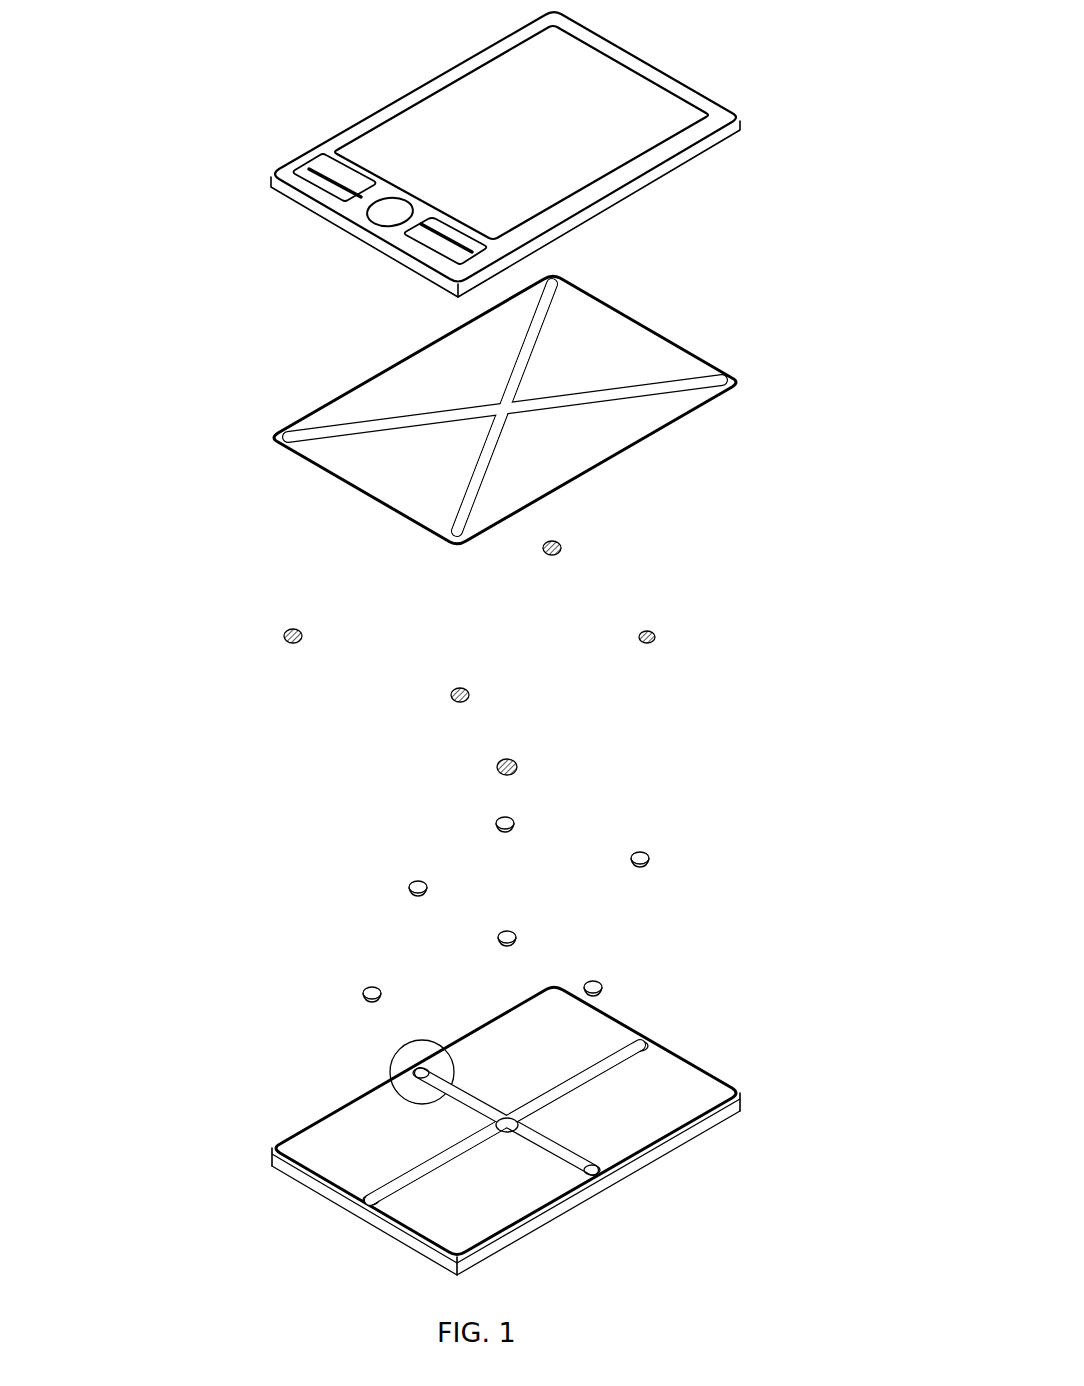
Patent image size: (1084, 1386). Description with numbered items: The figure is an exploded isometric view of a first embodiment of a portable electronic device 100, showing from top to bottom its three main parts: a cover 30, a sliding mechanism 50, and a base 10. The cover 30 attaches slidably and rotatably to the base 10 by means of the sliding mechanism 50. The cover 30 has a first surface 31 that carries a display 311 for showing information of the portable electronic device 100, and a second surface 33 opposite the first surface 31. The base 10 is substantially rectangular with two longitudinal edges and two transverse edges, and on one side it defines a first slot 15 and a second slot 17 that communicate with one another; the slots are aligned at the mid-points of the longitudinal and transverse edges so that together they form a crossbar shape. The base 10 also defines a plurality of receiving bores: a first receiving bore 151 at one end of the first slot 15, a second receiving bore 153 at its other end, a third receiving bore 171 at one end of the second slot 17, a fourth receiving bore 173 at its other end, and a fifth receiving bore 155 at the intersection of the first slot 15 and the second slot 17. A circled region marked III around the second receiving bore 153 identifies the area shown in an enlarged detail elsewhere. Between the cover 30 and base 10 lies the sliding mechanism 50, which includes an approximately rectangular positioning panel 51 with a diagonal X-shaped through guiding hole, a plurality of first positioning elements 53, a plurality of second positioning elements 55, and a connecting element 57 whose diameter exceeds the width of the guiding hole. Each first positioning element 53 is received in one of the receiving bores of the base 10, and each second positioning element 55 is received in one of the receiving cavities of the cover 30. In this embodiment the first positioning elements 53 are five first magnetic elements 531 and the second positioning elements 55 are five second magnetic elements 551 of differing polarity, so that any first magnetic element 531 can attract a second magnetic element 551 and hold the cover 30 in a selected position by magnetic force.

The portable electronic device 100 is at (198, 45).
The cover 30 is at (398, 72).
The first surface 31 is at (705, 95).
The display 311 is at (618, 98).
The second surface 33 is at (310, 214).
The sliding mechanism 50 is at (830, 485).
The positioning panel 51 is at (603, 437).
The first positioning elements 53 is at (765, 542).
The first magnetic elements 531 is at (562, 548).
The connecting element 57 is at (513, 820).
The second positioning elements 55 is at (765, 777).
The second magnetic elements 551 is at (427, 884).
The base 10 is at (740, 1062).
The detail region III is at (408, 1043).
The second slot 17 is at (417, 1172).
The third receiving bore 171 is at (644, 1046).
The fourth receiving bore 173 is at (360, 1205).
The first slot 15 is at (560, 1153).
The first receiving bore 151 is at (599, 1176).
The second receiving bore 153 is at (414, 1070).
The fifth receiving bore 155 is at (503, 1122).